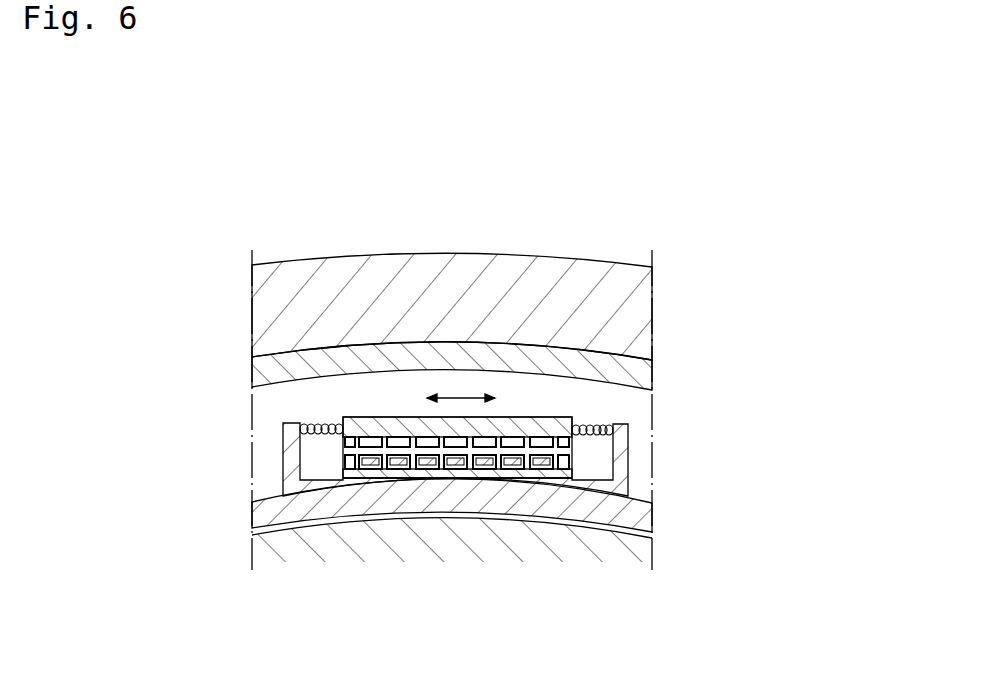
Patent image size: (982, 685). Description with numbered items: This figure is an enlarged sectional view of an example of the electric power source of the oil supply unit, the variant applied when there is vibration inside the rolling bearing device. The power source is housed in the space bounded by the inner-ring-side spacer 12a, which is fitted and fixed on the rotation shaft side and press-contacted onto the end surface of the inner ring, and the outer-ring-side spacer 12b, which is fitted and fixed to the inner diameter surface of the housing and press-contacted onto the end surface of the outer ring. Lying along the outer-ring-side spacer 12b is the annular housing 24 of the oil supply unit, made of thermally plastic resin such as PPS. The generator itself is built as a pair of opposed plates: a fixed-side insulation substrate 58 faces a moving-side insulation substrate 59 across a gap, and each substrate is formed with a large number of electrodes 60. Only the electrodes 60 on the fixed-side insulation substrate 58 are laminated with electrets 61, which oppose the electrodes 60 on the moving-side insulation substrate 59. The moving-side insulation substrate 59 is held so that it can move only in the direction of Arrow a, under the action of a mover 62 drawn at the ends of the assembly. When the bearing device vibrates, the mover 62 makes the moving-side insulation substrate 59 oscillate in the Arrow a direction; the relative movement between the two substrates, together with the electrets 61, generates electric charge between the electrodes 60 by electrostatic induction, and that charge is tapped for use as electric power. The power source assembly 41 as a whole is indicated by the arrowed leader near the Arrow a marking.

The inner-ring-side spacer 12a is at (642, 546).
The outer-ring-side spacer 12b is at (643, 322).
The annular housing 24 is at (452, 288).
The sensor module 41 is at (457, 330).
The fixed-side insulation substrate 58 is at (457, 553).
The moving-side insulation substrate 59 is at (457, 312).
The electrodes 60 is at (457, 412).
The electrets 61 is at (456, 547).
The mover 62 is at (456, 311).